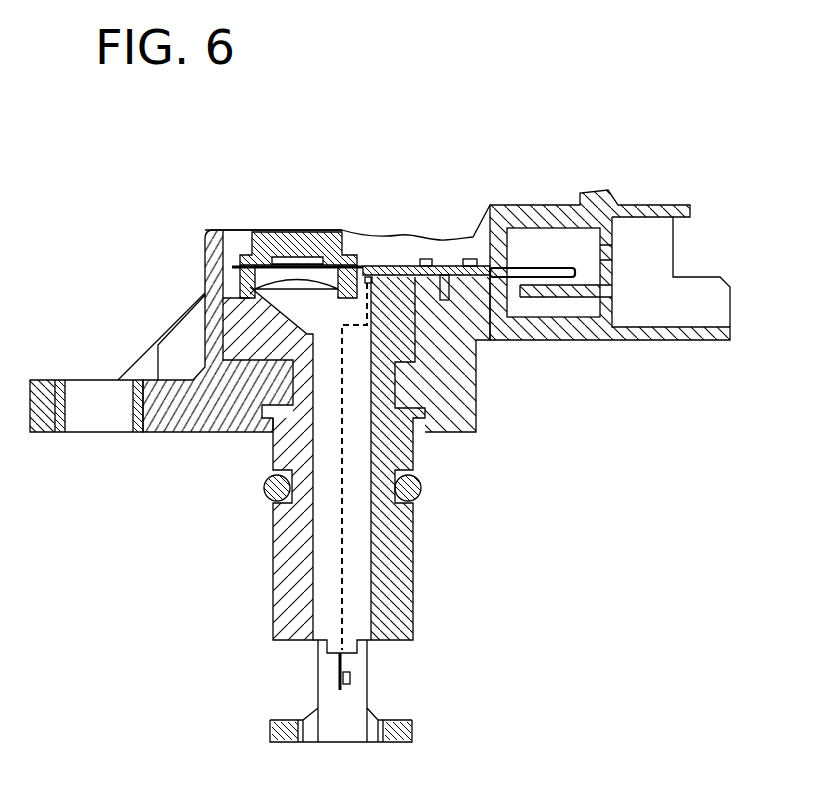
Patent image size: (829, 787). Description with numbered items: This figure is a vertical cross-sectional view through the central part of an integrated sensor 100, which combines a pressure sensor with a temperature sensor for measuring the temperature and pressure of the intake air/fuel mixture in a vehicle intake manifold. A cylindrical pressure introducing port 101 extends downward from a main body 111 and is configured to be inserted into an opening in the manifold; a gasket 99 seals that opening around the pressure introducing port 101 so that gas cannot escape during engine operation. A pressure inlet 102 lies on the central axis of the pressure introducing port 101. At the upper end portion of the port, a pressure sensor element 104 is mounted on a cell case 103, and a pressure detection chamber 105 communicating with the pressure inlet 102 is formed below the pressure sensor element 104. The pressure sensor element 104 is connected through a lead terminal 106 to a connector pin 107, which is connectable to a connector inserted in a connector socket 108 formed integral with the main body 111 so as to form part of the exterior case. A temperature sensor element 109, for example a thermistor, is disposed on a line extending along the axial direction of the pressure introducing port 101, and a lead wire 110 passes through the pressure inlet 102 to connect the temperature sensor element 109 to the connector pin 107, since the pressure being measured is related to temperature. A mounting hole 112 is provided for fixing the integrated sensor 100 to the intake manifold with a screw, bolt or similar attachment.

The gasket 99 is at (252, 500).
The integrated sensor 100 is at (398, 424).
The pressure introducing port 101 is at (397, 525).
The pressure inlet 102 is at (354, 590).
The cell case 103 is at (284, 230).
The pressure sensor element 104 is at (316, 230).
The pressure detection chamber 105 is at (297, 300).
The lead terminal 106 is at (388, 262).
The connector pin 107 is at (528, 276).
The connector socket 108 is at (566, 203).
The temperature sensor element 109 is at (351, 675).
The lead wire 110 is at (344, 455).
The main body 111 is at (204, 432).
The mounting hole 112 is at (91, 440).